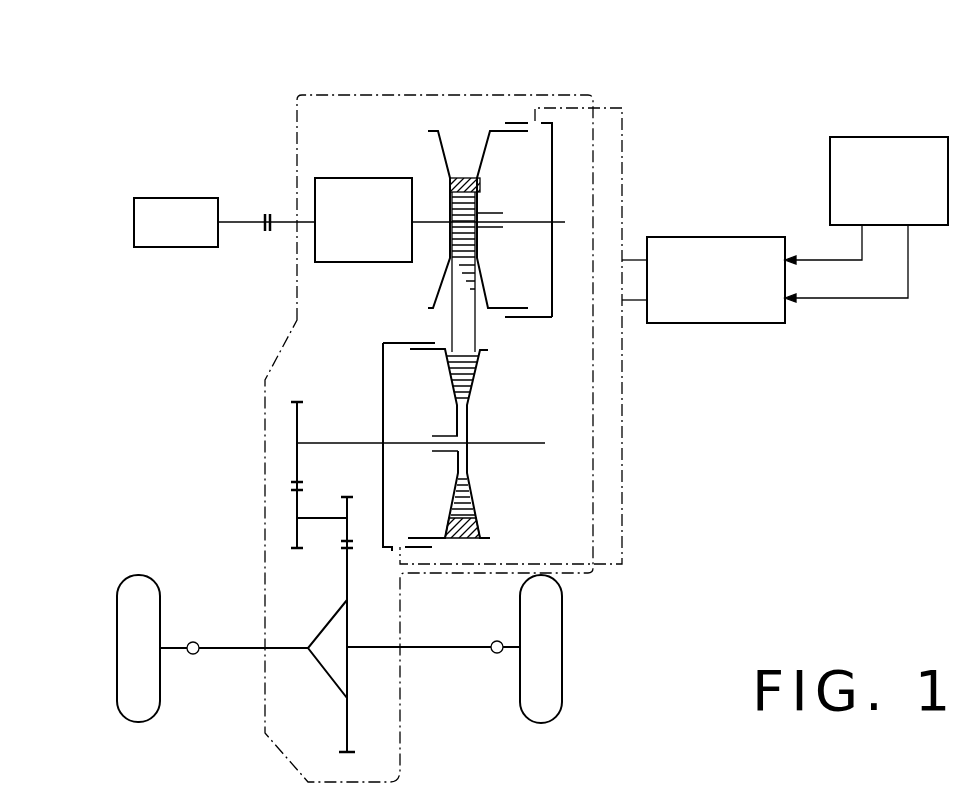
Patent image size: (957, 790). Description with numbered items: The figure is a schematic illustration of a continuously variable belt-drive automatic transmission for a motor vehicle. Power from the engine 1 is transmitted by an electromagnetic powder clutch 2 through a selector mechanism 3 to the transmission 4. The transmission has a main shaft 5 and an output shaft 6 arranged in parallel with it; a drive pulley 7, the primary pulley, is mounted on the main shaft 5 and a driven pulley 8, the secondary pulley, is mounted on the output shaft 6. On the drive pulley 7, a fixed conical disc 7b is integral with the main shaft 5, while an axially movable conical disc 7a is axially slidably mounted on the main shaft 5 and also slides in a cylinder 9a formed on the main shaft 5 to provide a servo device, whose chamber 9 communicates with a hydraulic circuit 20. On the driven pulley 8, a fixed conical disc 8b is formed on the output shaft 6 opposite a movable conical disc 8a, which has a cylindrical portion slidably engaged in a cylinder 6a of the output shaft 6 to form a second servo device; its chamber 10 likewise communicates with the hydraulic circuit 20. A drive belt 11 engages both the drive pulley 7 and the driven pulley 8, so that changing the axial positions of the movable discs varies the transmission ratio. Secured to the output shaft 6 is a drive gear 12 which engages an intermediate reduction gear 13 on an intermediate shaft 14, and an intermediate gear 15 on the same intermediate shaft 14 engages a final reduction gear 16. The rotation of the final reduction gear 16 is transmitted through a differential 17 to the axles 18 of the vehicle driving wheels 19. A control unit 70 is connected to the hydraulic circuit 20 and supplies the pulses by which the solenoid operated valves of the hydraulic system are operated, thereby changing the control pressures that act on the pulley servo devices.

The engine 1 is at (188, 198).
The electromagnetic powder clutch 2 is at (268, 212).
The selector mechanism 3 is at (365, 178).
The transmission 4 is at (472, 126).
The main shaft 5 is at (420, 224).
The output shaft 6 is at (341, 441).
The cylinder of the output shaft 6a is at (403, 342).
The drive pulley 7 is at (413, 131).
The axially movable conical disc 7a is at (497, 130).
The fixed conical disc 7b is at (438, 154).
The driven pulley 8 is at (496, 499).
The movable conical disc 8a is at (446, 357).
The fixed conical disc 8b is at (470, 386).
The chamber 9 is at (540, 178).
The cylinder 9a is at (532, 318).
The chamber 10 is at (383, 378).
The drive belt 11 is at (467, 535).
The drive gear 12 is at (297, 400).
The intermediate reduction gear 13 is at (297, 552).
The intermediate shaft 14 is at (318, 517).
The intermediate gear 15 is at (347, 495).
The final reduction gear 16 is at (347, 752).
The differential 17 is at (330, 632).
The axles 18 is at (178, 654).
The driving wheels 19 is at (152, 605).
The hydraulic circuit 20 is at (710, 323).
The control unit 70 is at (868, 137).